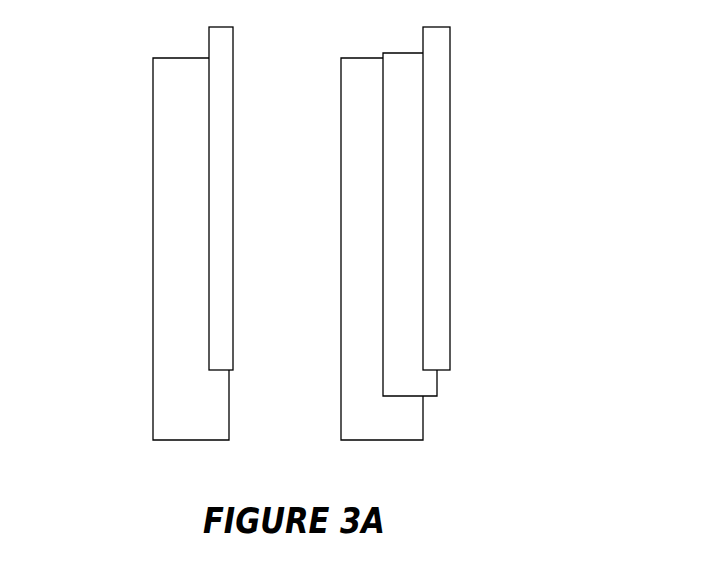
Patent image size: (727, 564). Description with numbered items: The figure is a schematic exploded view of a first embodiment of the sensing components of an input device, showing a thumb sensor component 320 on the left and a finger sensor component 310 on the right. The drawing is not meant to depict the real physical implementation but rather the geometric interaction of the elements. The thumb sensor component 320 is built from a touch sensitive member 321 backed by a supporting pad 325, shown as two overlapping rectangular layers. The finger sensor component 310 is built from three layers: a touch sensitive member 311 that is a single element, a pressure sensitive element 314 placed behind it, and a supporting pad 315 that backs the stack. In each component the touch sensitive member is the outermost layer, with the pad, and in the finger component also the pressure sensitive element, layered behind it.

The finger sensor component 310 is at (441, 233).
The touch sensitive member 311 is at (443, 251).
The pressure sensitive element 314 is at (403, 196).
The supporting pad 315 is at (368, 295).
The thumb sensor component 320 is at (145, 233).
The touch sensitive member 321 is at (206, 190).
The supporting pad 325 is at (152, 268).